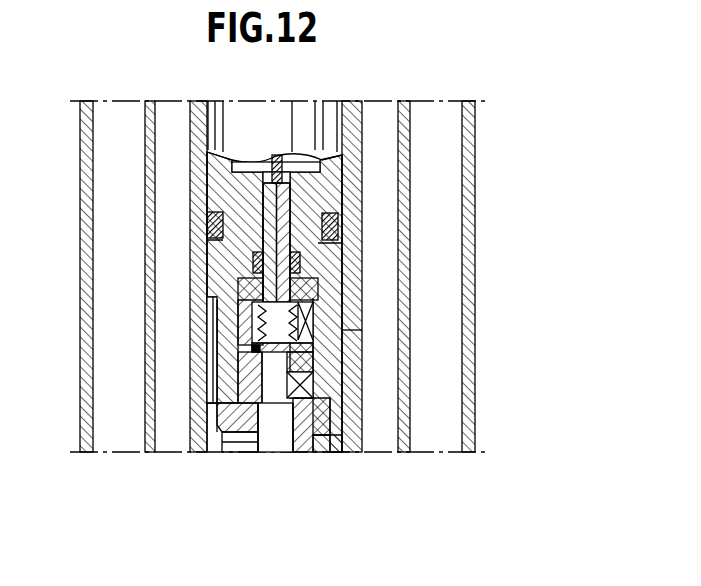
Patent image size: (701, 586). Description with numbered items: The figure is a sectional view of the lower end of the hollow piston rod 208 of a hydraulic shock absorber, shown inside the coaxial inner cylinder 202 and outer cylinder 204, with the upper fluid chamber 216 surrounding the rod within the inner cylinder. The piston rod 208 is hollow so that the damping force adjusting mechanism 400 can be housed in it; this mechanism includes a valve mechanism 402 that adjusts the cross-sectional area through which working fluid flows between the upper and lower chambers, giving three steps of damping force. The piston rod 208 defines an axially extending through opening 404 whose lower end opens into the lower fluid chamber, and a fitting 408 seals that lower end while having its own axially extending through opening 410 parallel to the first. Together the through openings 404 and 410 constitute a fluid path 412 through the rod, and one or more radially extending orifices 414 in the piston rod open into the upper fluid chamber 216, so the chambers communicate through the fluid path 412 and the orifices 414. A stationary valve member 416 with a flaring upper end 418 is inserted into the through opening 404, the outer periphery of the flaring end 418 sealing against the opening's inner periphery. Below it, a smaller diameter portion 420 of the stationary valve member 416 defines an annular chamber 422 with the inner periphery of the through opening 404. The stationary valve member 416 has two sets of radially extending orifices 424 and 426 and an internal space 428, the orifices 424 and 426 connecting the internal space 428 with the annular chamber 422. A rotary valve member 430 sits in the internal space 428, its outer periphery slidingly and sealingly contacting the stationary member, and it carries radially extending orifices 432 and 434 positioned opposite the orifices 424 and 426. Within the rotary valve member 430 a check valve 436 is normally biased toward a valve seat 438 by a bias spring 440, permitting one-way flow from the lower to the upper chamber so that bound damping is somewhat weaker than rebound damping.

The inner cylinder 202 is at (475, 208).
The outer cylinder 204 is at (410, 296).
The piston rod 208 is at (352, 108).
The upper fluid chamber 216 is at (390, 343).
The damping force adjusting mechanism 400 is at (362, 236).
The valve mechanism 402 is at (362, 358).
The through opening 404 is at (210, 453).
The fitting 408 is at (222, 455).
The through opening 410 is at (285, 410).
The fluid path 412 is at (318, 447).
The radially extending orifices 414 is at (352, 382).
The stationary valve member 416 is at (212, 332).
The flaring upper end 418 is at (222, 262).
The smaller diameter portion 420 is at (223, 347).
The annular chamber 422 is at (210, 377).
The radially extending orifices 424 is at (398, 330).
The radially extending orifices 426 is at (357, 402).
The internal space 428 is at (325, 252).
The rotary valve member 430 is at (250, 453).
The radially extending orifices 432 is at (305, 290).
The radially extending orifices 434 is at (305, 398).
The check valve 436 is at (278, 357).
The valve seat 438 is at (245, 366).
The bias spring 440 is at (255, 315).